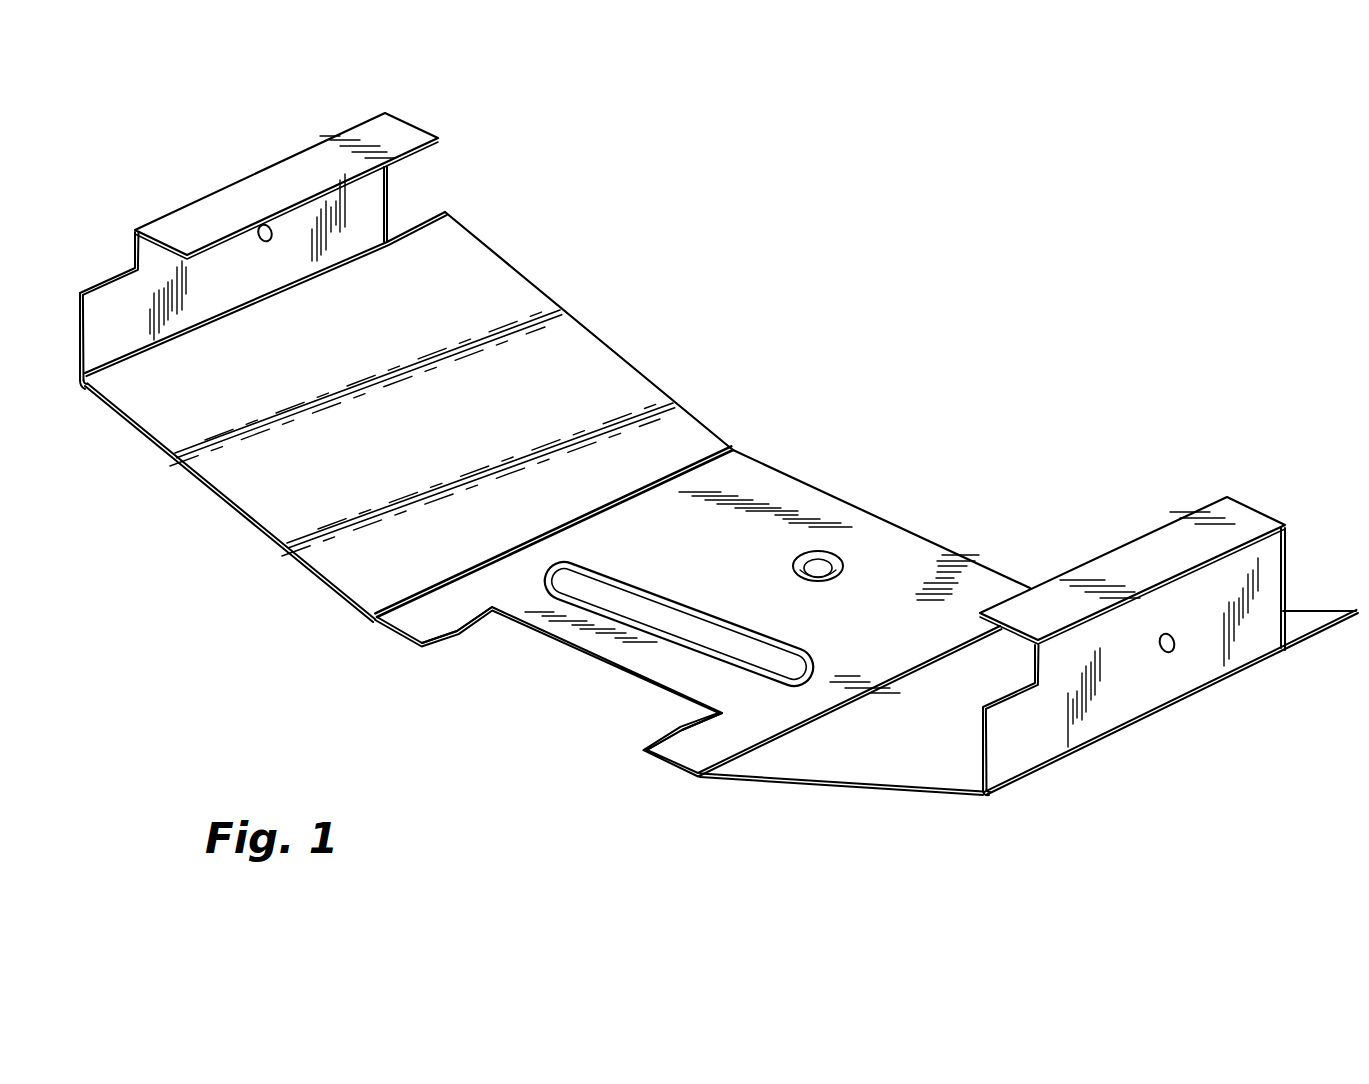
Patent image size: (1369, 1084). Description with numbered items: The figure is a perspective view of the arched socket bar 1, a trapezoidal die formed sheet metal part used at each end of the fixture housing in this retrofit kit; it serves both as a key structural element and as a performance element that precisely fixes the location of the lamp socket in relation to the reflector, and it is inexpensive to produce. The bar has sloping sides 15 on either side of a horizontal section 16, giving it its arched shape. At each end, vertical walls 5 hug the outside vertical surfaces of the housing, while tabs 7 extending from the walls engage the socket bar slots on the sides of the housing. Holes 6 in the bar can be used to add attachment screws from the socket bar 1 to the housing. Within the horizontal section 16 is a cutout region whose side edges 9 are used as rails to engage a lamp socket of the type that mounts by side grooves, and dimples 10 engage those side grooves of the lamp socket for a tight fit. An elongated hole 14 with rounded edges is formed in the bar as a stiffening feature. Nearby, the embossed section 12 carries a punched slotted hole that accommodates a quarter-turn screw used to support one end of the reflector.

The arched socket bar 1 is at (916, 243).
The vertical wall 5 is at (80, 330).
The hole 6 is at (268, 238).
The tab 7 is at (207, 216).
The side edge 9 is at (456, 633).
The dimple 10 is at (421, 647).
The embossed section 12 is at (833, 550).
The elongated hole 14 is at (685, 592).
The sloping side 15 is at (223, 503).
The horizontal section 16 is at (935, 568).